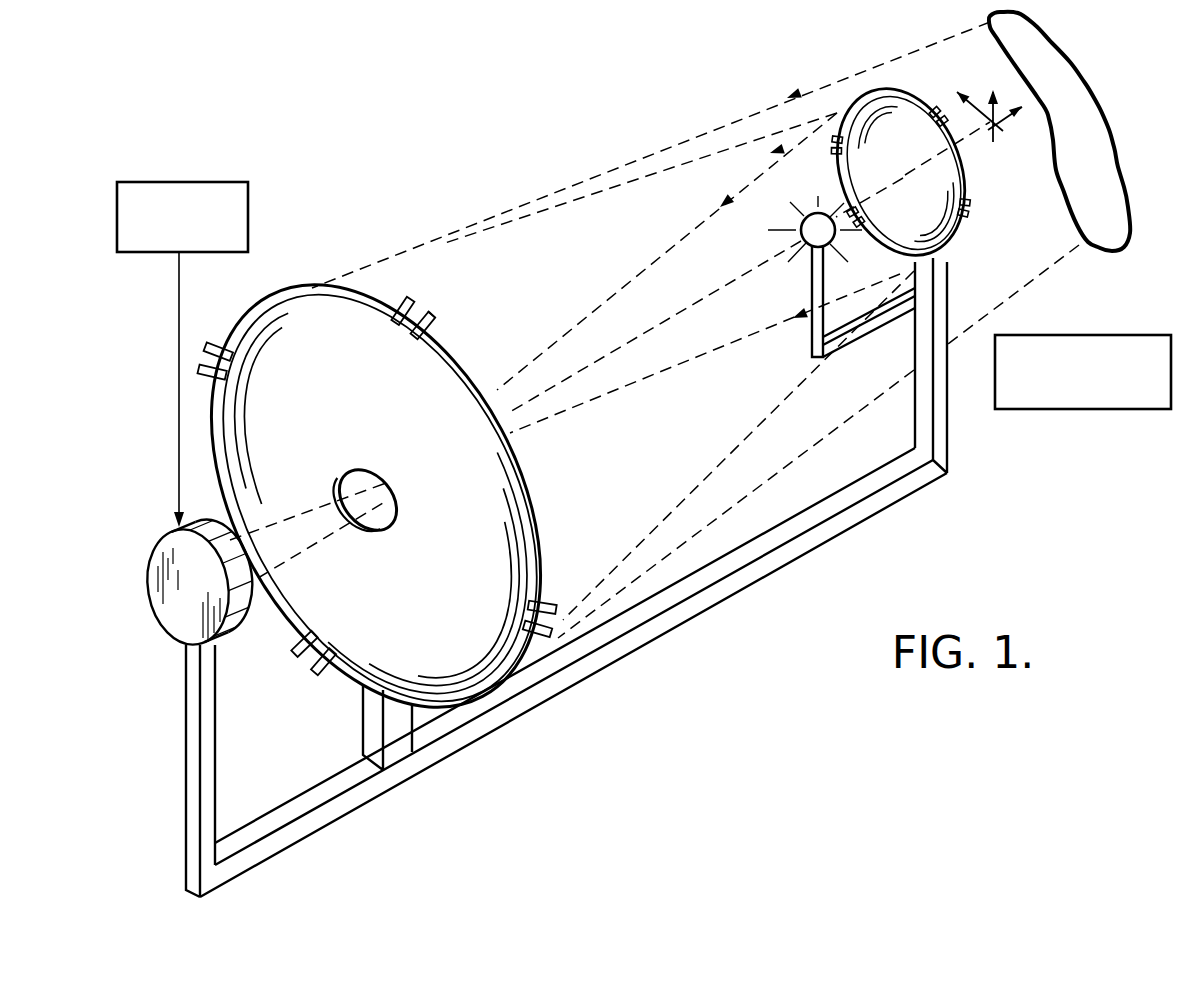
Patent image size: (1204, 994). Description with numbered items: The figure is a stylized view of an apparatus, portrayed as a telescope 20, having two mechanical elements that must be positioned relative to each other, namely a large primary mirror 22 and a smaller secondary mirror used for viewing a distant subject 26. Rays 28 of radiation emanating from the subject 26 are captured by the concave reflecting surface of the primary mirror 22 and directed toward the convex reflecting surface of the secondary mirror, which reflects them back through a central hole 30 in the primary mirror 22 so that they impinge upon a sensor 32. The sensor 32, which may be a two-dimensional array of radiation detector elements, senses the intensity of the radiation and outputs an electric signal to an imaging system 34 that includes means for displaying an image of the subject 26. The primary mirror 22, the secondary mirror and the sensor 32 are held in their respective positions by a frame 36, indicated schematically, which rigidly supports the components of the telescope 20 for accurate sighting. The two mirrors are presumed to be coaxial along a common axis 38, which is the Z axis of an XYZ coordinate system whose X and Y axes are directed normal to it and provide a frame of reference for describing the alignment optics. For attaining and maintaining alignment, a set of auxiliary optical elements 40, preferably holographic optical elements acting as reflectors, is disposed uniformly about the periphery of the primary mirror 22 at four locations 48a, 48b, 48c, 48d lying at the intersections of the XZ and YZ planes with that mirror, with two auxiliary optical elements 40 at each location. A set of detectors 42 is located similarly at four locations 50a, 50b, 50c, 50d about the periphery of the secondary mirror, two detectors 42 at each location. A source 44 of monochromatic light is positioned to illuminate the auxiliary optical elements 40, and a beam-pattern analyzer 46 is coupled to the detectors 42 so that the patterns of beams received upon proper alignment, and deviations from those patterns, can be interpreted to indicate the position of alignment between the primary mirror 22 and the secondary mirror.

The telescope 20 is at (285, 282).
The primary mirror 22 is at (266, 301).
The subject 26 is at (1114, 250).
The rays 28 is at (826, 82).
The central hole 30 is at (378, 470).
The sensor 32 is at (166, 624).
The imaging system 34 is at (247, 182).
The frame 36 is at (842, 533).
The common axis 38 is at (998, 127).
The auxiliary optical elements 40 is at (437, 320).
The detectors 42 is at (893, 109).
The source of monochromatic light 44 is at (812, 246).
The beam-pattern analyzer 46 is at (1171, 409).
The location 48a is at (398, 328).
The location 48b is at (208, 342).
The location 48c is at (308, 652).
The location 48d is at (552, 604).
The location 50a is at (945, 126).
The location 50b is at (832, 154).
The location 50c is at (862, 230).
The location 50d is at (970, 206).